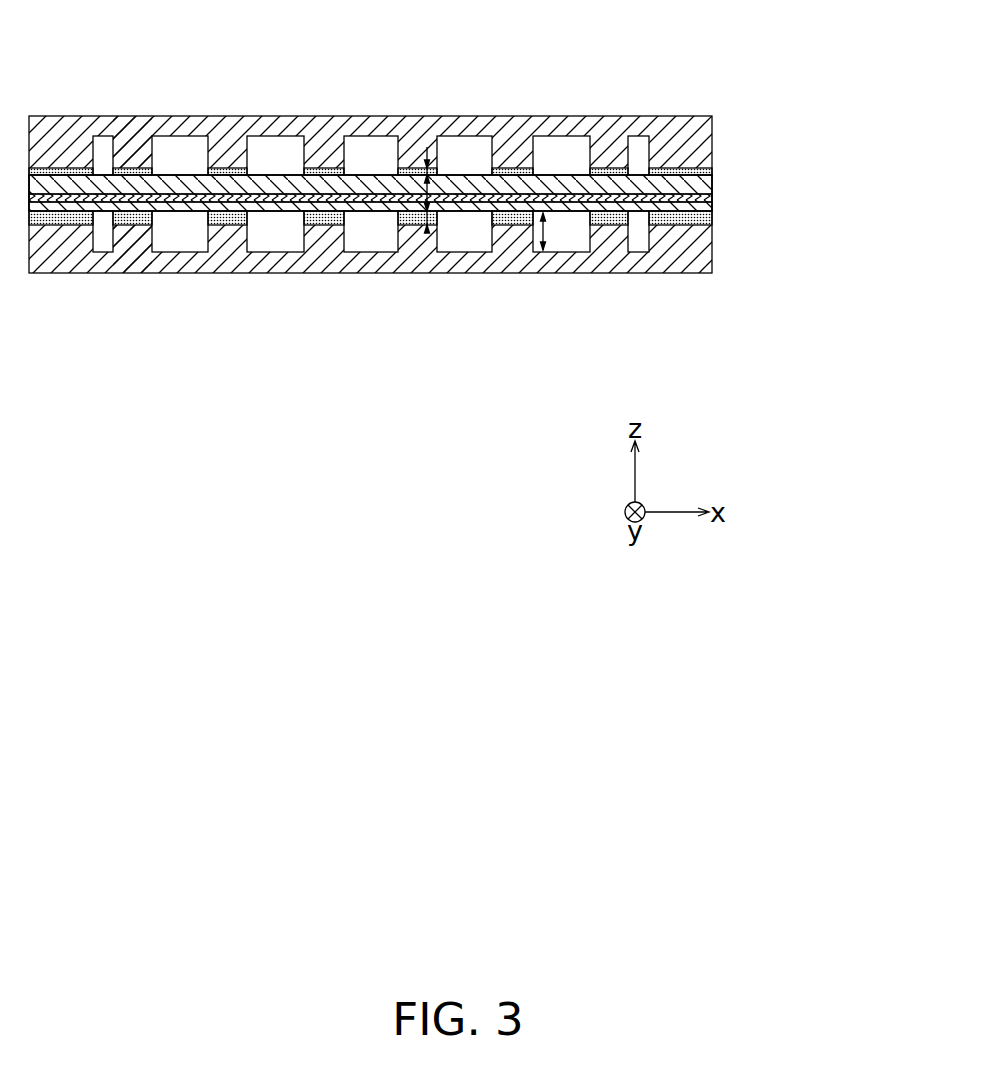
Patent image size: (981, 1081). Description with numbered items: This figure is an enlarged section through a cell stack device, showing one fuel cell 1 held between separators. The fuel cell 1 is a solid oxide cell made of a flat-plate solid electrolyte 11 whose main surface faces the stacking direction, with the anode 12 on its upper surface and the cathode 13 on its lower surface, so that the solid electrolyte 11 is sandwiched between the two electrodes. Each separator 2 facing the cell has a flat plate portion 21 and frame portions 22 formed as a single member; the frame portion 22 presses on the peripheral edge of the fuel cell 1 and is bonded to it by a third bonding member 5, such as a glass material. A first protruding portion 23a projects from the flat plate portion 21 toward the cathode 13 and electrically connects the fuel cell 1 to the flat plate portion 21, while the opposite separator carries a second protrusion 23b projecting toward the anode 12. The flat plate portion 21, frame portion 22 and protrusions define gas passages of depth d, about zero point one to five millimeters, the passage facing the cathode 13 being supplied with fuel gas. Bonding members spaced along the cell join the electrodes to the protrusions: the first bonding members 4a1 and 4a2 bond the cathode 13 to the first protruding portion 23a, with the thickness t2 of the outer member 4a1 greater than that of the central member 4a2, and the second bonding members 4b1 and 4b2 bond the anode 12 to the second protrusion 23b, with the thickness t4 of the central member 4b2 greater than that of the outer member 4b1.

The fuel cell 1 is at (425, 200).
The separator 2 is at (723, 113).
The first bonding member 4a1 is at (130, 227).
The first bonding member 4a2 is at (325, 215).
The second bonding member 4b1 is at (128, 168).
The second bonding member 4b2 is at (320, 163).
The third bonding member 5 is at (712, 170).
The solid electrolyte 11 is at (712, 198).
The anode 12 is at (703, 181).
The cathode 13 is at (405, 225).
The flat plate portion 21 is at (514, 127).
The frame portion 22 is at (690, 123).
The first protruding portion 23a is at (228, 233).
The second protrusion 23b is at (228, 148).
The thickness of second bonding member t4 is at (437, 165).
The thickness of first bonding member t2 is at (437, 220).
The depth of gas passage d is at (556, 231).